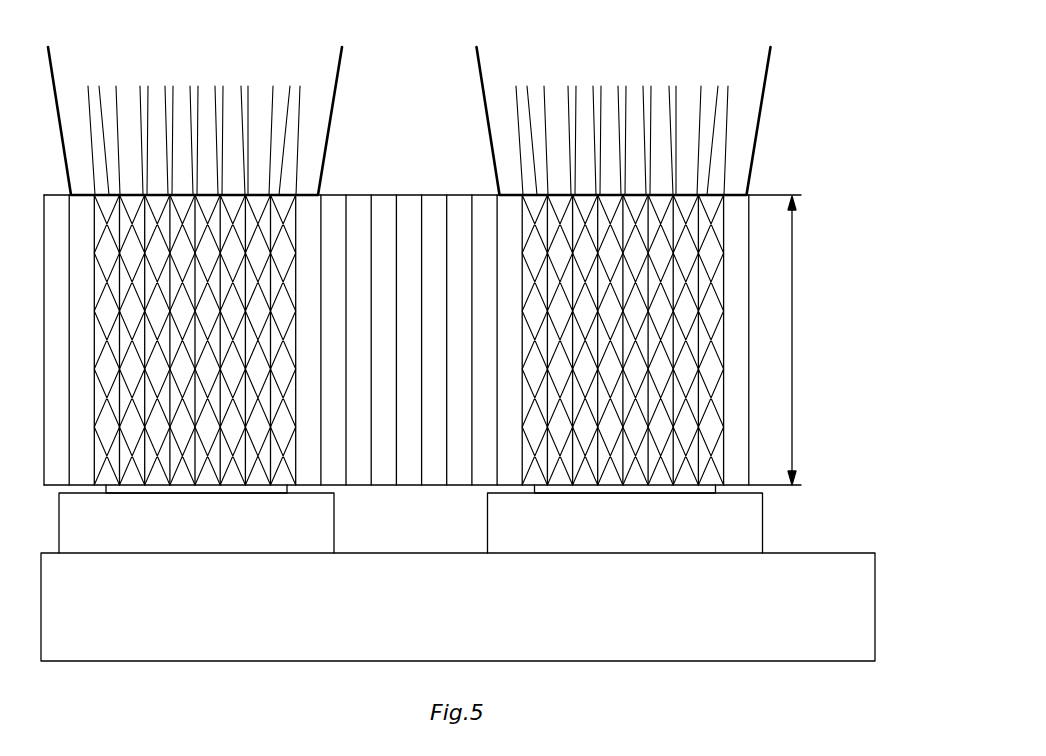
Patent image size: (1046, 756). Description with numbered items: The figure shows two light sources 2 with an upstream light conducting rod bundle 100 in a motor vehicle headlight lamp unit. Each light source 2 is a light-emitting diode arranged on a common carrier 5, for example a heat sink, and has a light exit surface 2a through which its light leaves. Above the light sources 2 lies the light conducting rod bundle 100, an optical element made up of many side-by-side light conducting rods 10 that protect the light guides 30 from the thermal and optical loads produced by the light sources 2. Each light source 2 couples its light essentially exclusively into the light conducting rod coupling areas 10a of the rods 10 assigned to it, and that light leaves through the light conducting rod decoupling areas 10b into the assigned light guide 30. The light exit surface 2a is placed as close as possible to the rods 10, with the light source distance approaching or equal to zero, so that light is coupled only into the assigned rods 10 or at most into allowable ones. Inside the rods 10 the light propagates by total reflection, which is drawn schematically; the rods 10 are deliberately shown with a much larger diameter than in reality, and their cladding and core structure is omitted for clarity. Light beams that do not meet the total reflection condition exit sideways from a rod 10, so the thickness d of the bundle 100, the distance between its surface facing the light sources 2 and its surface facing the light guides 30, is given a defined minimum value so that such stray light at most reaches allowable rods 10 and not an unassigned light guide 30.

The light conducting rod bundle 100 is at (457, 294).
The light conducting rod 10 is at (287, 236).
The light conducting rod coupling area 10a is at (437, 486).
The light conducting rod decoupling area 10b is at (484, 194).
The light guide 30 is at (277, 68).
The light source 2 is at (257, 533).
The light exit surface 2a is at (237, 466).
The carrier 5 is at (638, 623).
The thickness of the light conducting rod bundle d is at (783, 340).